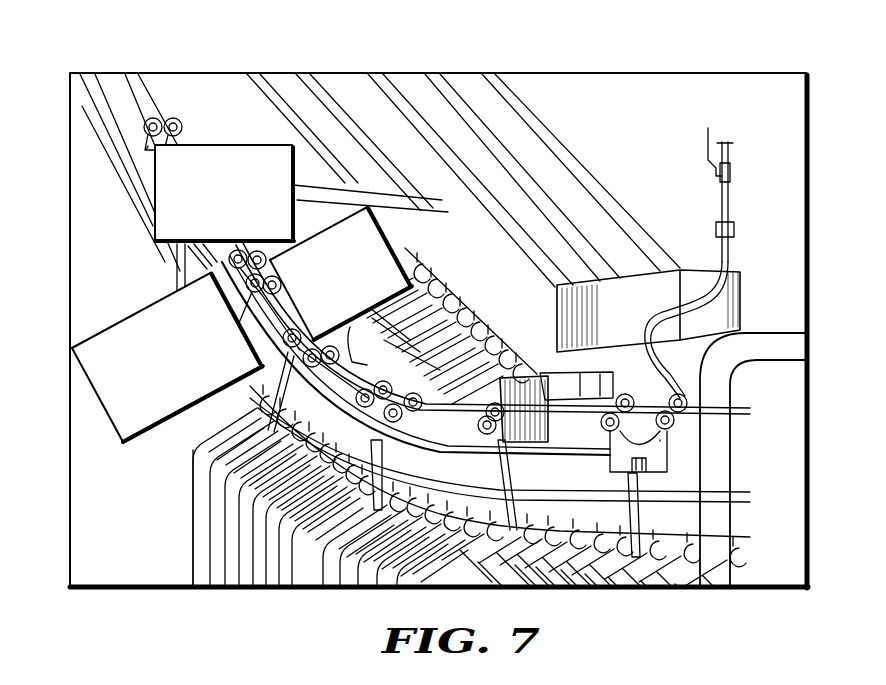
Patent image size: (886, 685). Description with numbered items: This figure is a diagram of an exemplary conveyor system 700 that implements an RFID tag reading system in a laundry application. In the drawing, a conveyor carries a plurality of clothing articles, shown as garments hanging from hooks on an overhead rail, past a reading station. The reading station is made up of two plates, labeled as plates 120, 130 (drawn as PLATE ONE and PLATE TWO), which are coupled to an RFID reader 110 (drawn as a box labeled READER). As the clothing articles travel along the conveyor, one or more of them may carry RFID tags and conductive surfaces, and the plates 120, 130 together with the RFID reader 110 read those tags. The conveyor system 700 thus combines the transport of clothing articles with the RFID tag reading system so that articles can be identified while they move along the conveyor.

The RFID reader 110 is at (223, 146).
The plate 120 is at (343, 223).
The plate 130 is at (95, 393).
The conveyor system 700 is at (699, 638).